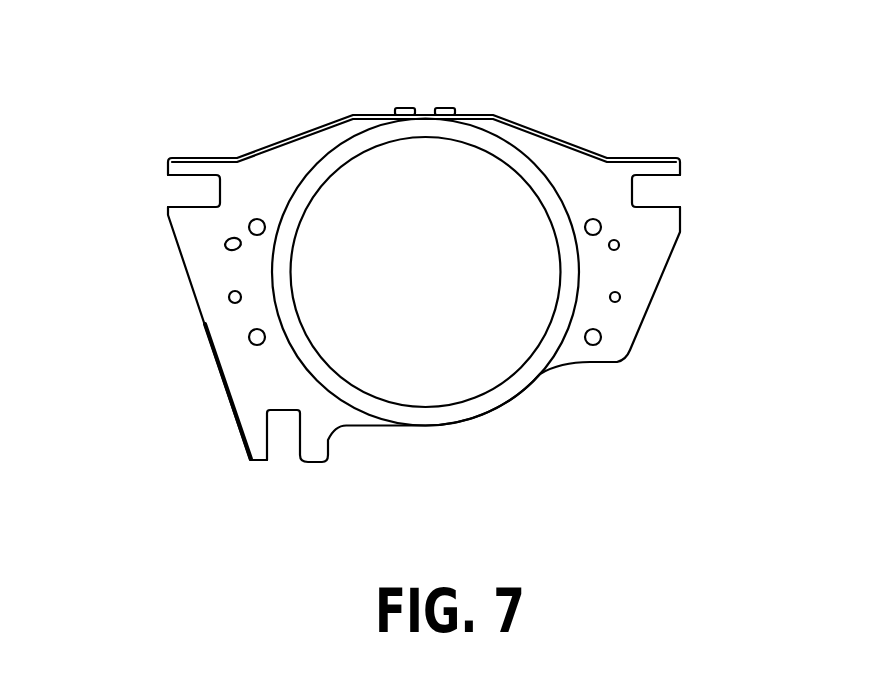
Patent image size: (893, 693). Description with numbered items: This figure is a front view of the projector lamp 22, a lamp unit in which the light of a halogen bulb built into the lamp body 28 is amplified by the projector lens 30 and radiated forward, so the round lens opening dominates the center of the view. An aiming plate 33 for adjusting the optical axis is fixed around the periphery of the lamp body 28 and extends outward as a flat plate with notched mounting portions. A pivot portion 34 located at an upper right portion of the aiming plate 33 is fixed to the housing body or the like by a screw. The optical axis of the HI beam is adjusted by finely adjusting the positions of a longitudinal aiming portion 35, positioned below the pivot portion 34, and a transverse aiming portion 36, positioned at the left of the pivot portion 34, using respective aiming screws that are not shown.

The projector lamp 22 is at (309, 163).
The lamp body 28 is at (503, 140).
The projector lens 30 is at (497, 207).
The aiming plate 33 is at (208, 378).
The pivot portion 34 is at (192, 188).
The longitudinal aiming portion 35 is at (283, 440).
The transverse aiming portion 36 is at (657, 188).